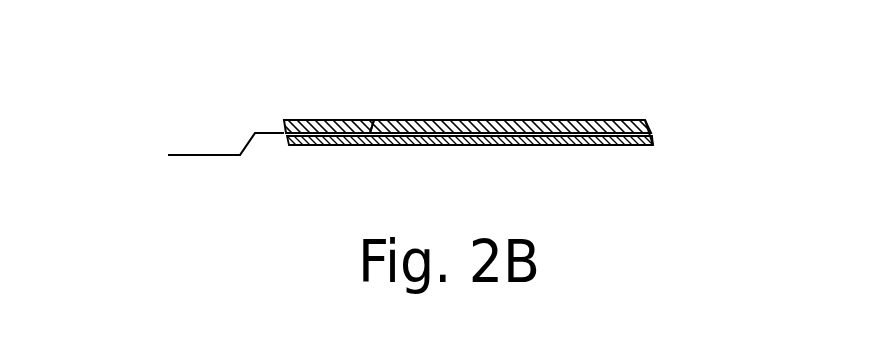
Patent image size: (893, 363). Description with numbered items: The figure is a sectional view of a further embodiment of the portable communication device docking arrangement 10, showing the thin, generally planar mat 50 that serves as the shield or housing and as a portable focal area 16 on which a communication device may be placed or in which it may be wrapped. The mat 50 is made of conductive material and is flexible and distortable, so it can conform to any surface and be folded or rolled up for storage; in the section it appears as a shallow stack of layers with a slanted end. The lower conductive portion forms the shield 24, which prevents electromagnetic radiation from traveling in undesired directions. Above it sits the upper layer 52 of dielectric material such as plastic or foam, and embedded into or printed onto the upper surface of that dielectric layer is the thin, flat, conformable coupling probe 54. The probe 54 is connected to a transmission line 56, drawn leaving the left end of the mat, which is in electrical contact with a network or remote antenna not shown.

The portable communication device docking arrangement 10 is at (493, 73).
The focal area 16 is at (548, 120).
The shield 24 is at (637, 148).
The mat 50 is at (623, 116).
The upper layer 52 is at (648, 128).
The coupling probe 54 is at (448, 121).
The transmission line 56 is at (228, 153).